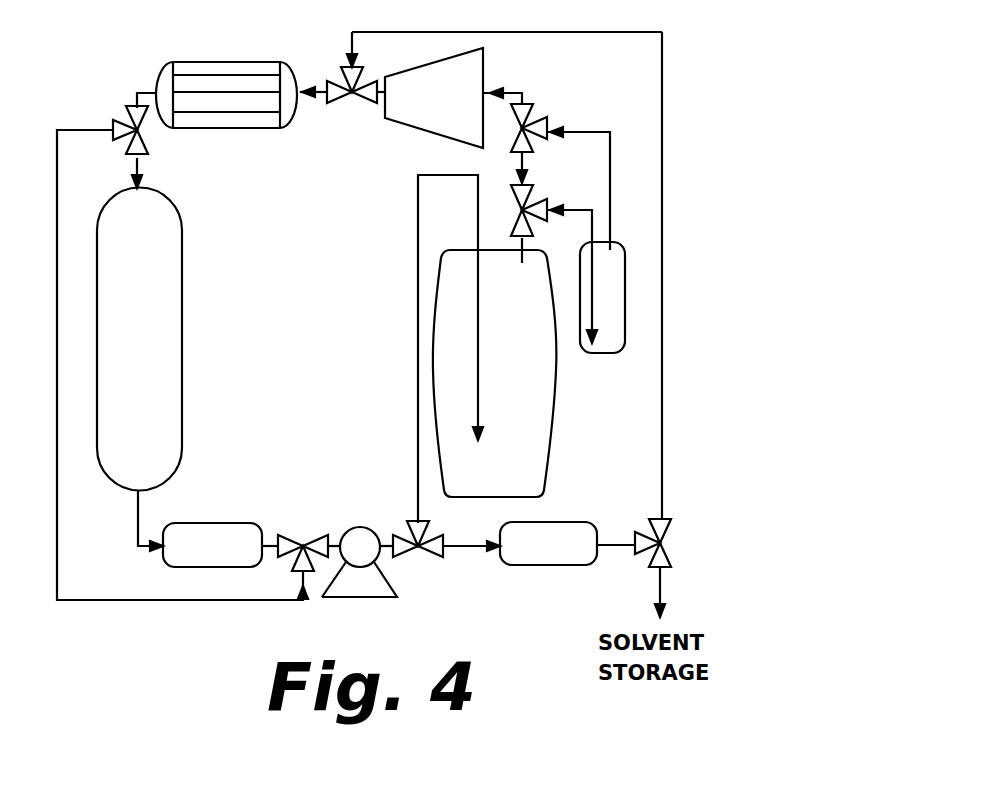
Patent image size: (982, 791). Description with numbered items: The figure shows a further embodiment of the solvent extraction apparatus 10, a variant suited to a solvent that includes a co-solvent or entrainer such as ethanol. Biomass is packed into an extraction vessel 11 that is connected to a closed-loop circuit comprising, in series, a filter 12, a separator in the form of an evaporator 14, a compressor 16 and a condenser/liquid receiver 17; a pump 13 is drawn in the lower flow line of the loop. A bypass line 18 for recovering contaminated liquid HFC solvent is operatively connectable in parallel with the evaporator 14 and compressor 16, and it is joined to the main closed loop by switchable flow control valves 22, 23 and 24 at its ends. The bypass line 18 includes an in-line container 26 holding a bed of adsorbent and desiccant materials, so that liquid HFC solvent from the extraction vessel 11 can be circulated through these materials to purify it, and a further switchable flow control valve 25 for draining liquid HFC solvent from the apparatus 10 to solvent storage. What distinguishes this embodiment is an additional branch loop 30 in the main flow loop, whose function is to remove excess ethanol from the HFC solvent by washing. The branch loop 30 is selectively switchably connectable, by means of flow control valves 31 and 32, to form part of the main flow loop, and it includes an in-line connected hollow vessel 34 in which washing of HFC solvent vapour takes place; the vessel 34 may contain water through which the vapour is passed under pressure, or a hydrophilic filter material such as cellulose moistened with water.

The apparatus 10 is at (695, 78).
The extraction vessel 11 is at (165, 387).
The filter 12 is at (213, 538).
The pump 13 is at (358, 543).
The evaporator 14 is at (535, 432).
The compressor 16 is at (468, 77).
The condenser/liquid receiver 17 is at (287, 115).
The bypass line 18 is at (662, 362).
The switchable flow control valve 22 is at (333, 98).
The switchable flow control valve 23 is at (118, 123).
The switchable flow control valve 24 is at (287, 547).
The switchable flow control valve 25 is at (670, 527).
The container 26 is at (562, 535).
The branch loop 30 is at (608, 193).
The flow control valve 31 is at (533, 191).
The flow control valve 32 is at (540, 107).
The hollow vessel 34 is at (612, 275).